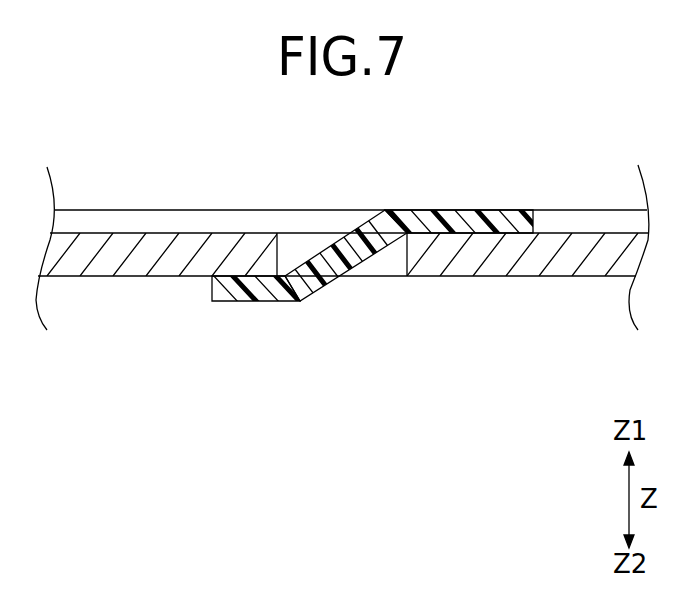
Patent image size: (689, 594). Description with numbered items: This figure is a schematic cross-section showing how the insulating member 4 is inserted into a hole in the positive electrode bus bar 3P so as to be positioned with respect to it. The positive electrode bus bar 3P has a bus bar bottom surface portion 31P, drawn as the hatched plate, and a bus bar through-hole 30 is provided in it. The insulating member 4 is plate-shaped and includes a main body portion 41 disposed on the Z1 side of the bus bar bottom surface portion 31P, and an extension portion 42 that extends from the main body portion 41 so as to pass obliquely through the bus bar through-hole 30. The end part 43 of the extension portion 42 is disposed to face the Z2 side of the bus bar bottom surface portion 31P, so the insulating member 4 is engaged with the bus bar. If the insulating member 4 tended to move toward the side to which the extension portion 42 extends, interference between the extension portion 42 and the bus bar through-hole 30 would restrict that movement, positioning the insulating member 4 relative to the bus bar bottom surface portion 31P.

The positive electrode bus bar 3P is at (568, 263).
The bus bar bottom surface portion 31P is at (475, 276).
The bus bar through-hole 30 is at (295, 258).
The main body portion 41 is at (325, 222).
The insulating member 4 is at (514, 209).
The extension portion 42 is at (333, 262).
The end part 43 is at (235, 288).